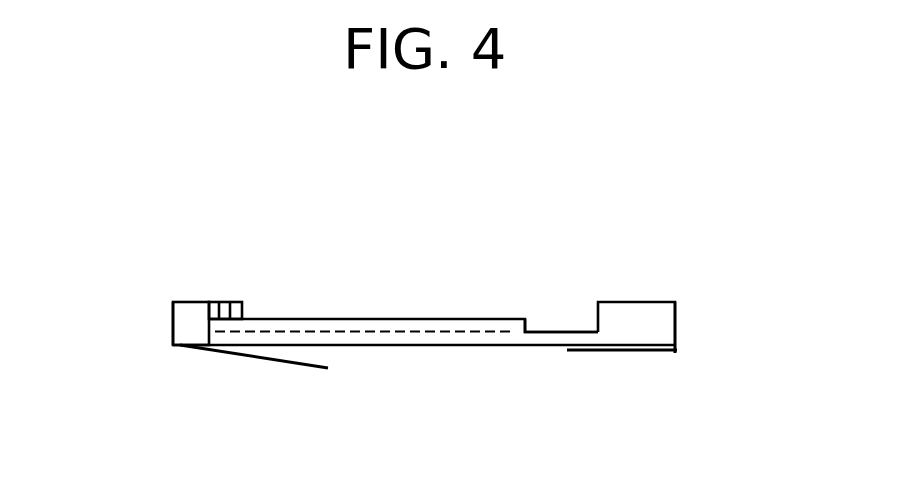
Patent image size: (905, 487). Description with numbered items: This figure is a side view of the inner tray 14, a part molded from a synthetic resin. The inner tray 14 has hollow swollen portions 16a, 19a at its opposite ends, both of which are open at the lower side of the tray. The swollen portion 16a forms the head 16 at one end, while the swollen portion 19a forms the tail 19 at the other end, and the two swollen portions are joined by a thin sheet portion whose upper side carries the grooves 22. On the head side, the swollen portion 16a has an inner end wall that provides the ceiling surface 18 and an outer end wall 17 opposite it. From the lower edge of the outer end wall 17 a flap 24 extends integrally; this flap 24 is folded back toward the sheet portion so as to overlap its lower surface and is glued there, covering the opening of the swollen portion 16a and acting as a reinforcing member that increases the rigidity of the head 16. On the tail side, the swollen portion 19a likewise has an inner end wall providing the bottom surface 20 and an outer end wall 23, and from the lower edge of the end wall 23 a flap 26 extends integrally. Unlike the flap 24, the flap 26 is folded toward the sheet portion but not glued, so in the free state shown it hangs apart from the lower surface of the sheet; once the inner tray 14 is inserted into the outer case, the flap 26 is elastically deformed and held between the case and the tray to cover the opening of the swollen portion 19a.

The inner tray 14 is at (403, 330).
The head 16 is at (653, 287).
The swollen portion 16a is at (630, 301).
The outer end wall 17 is at (677, 318).
The ceiling surface 18 is at (598, 318).
The tail 19 is at (196, 283).
The swollen portion 19a is at (186, 301).
The bottom surface 20 is at (244, 307).
The grooves 22 is at (424, 292).
The outer end wall 23 is at (173, 325).
The flap 24 is at (622, 352).
The flap 26 is at (255, 357).